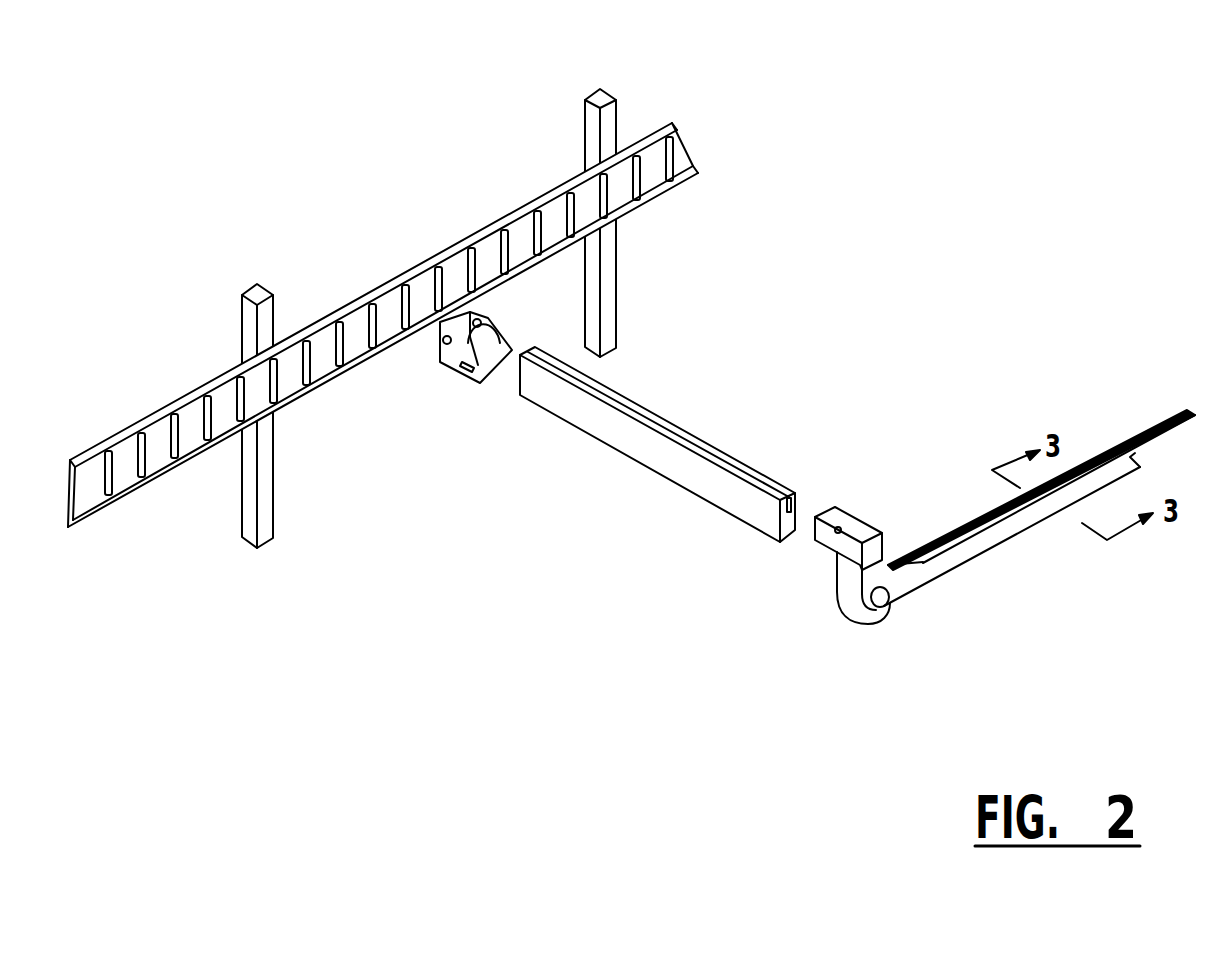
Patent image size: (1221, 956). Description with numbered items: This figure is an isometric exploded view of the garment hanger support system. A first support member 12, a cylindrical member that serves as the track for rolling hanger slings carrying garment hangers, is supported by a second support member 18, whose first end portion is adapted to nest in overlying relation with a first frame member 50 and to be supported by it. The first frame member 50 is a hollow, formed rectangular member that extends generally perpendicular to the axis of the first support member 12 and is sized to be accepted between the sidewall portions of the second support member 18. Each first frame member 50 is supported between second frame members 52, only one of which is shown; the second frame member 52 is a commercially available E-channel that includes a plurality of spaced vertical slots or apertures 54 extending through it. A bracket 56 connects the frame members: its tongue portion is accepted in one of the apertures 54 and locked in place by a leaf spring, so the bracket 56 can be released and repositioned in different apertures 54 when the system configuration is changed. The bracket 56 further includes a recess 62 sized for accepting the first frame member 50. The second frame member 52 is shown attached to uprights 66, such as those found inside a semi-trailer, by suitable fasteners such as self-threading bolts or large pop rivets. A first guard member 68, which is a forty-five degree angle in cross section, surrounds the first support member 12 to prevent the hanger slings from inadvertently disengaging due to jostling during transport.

The first support member 12 is at (1033, 495).
The second support member 18 is at (836, 575).
The first frame member 50 is at (672, 420).
The second frame member 52 is at (454, 325).
The apertures 54 is at (617, 197).
The bracket 56 is at (430, 409).
The recess 62 is at (505, 383).
The uprights 66 is at (263, 326).
The first guard member 68 is at (1187, 407).